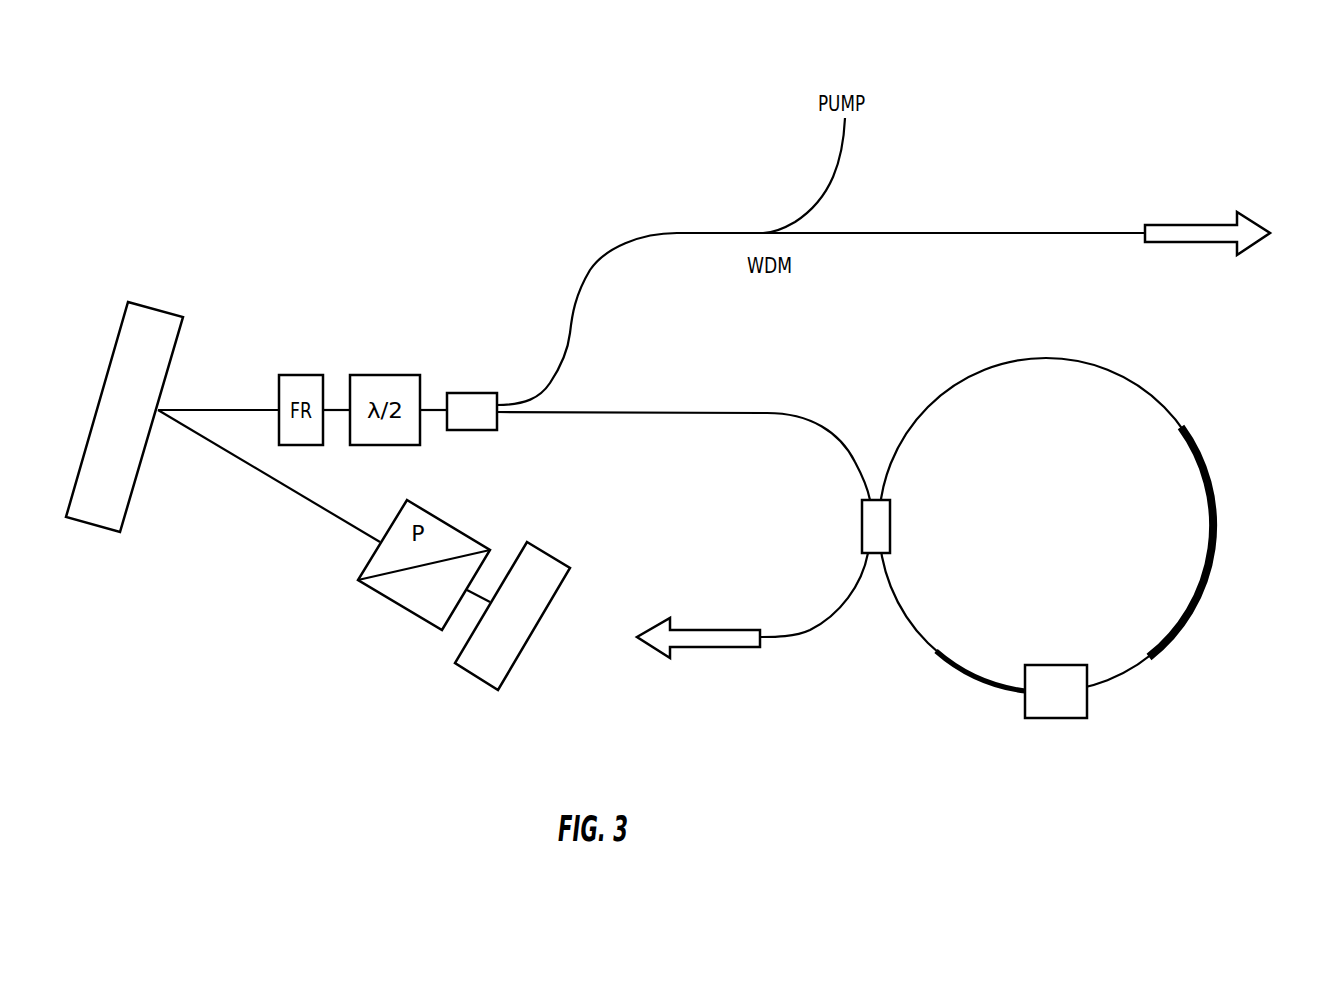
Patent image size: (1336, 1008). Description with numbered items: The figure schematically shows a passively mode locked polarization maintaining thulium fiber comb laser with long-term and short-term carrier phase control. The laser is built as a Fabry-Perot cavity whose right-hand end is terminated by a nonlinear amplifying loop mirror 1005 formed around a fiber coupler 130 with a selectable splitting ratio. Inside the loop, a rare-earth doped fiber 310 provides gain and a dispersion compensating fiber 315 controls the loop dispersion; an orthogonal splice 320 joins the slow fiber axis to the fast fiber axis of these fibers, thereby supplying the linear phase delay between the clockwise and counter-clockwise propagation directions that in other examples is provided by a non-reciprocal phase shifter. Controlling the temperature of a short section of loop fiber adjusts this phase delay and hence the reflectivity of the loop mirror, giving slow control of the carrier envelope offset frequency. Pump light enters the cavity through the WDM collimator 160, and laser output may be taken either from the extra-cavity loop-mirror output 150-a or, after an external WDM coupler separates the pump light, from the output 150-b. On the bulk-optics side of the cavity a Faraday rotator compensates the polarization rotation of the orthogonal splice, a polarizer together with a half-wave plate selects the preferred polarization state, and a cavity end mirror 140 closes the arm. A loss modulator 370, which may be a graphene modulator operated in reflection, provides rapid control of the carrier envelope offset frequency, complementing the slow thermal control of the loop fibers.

The loss modulator 370 is at (100, 533).
The WDM collimator 160 is at (480, 383).
The cavity end mirror 140 is at (548, 610).
The extra-cavity NALM output 150-a is at (656, 665).
The output 150-b is at (1250, 195).
The fiber coupler 130 is at (860, 522).
The nonlinear amplifying loop mirror 1005 is at (1226, 655).
The dispersion compensating fiber 315 is at (1223, 563).
The rare-earth doped fiber 310 is at (960, 675).
The orthogonal splice 320 is at (1062, 720).